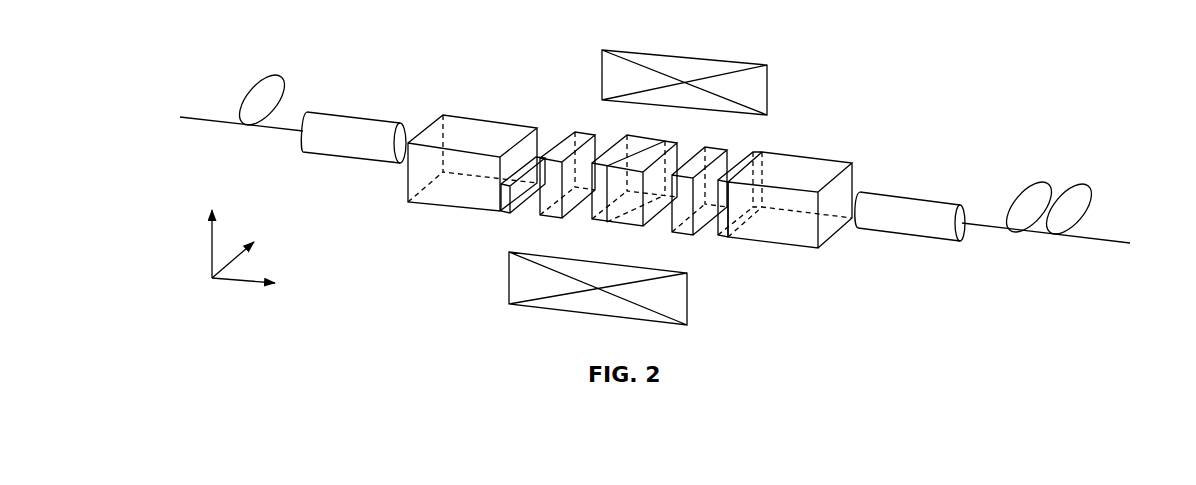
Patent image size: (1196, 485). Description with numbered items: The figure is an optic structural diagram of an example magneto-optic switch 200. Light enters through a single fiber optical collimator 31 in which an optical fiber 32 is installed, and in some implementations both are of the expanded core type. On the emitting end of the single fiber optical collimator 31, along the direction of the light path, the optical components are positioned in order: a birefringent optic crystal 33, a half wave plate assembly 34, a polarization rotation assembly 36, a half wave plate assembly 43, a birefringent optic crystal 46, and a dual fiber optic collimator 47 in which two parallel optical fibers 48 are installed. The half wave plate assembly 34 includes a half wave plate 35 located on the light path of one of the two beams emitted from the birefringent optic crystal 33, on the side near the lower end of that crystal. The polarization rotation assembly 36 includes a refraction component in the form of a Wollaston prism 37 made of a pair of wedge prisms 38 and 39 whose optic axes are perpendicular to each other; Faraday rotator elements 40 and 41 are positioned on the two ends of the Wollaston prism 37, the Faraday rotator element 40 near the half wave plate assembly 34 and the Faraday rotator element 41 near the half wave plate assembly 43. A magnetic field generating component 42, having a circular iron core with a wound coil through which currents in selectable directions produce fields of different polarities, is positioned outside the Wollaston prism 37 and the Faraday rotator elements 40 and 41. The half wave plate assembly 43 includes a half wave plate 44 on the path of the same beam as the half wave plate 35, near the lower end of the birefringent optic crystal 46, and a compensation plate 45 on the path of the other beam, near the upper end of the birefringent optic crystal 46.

The magneto-optic switch 200 is at (310, 42).
The single fiber optical collimator 31 is at (358, 162).
The optical fiber 32 is at (273, 126).
The birefringent optic crystal 33 is at (466, 120).
The half wave plate assembly 34 is at (488, 242).
The half wave plate 35 is at (503, 200).
The polarization rotation assembly 36 is at (770, 41).
The Wollaston prism 37 is at (608, 121).
The wedge prism 38 is at (635, 143).
The wedge prism 39 is at (633, 228).
The Faraday rotator element 40 is at (555, 208).
The Faraday rotator element 41 is at (719, 178).
The magnetic field generating component 42 is at (753, 98).
The half wave plate assembly 43 is at (720, 274).
The half wave plate 44 is at (725, 227).
The compensation plate 45 is at (752, 155).
The birefringent optic crystal 46 is at (820, 170).
The dual fiber optic collimator 47 is at (918, 192).
The optical fibers 48 is at (1021, 232).